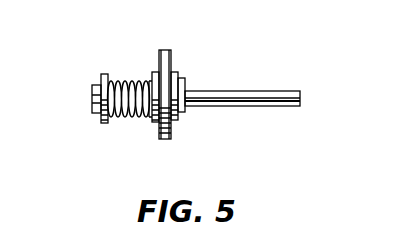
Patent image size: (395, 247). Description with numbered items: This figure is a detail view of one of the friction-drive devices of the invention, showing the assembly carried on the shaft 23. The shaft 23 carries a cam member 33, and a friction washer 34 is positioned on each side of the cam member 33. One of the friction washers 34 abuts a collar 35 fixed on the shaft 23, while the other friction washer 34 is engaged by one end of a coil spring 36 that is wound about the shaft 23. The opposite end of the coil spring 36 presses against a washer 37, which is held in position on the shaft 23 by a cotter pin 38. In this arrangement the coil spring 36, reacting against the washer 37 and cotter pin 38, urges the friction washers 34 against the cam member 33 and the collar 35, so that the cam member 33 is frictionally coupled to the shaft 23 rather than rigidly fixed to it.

The shaft 23 is at (277, 92).
The cam member 33 is at (165, 52).
The friction washer 34 is at (154, 73).
The collar 35 is at (183, 86).
The coil spring 36 is at (118, 113).
The washer 37 is at (105, 75).
The cotter pin 38 is at (99, 80).